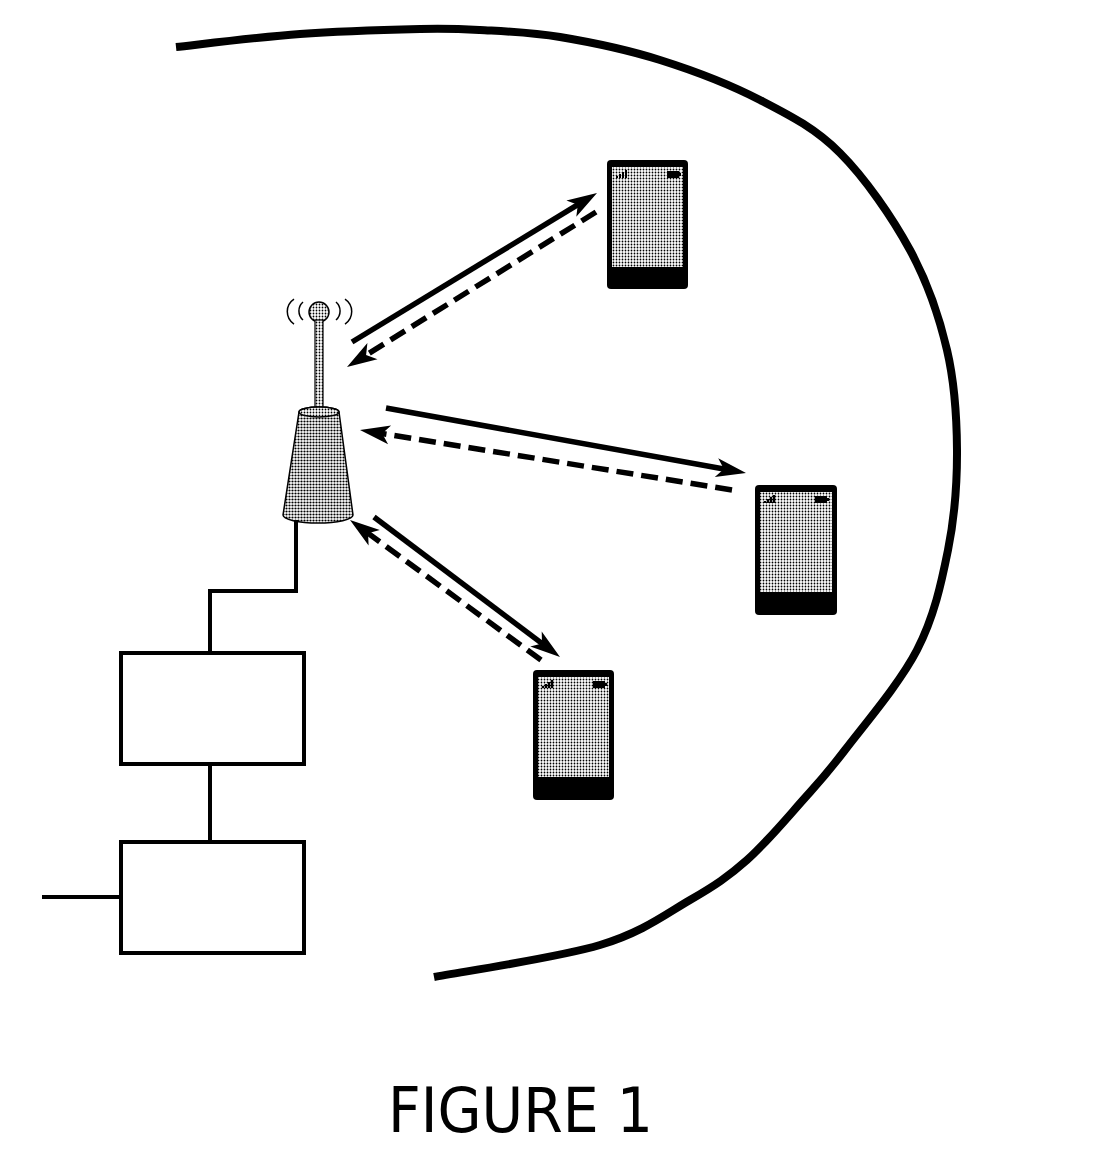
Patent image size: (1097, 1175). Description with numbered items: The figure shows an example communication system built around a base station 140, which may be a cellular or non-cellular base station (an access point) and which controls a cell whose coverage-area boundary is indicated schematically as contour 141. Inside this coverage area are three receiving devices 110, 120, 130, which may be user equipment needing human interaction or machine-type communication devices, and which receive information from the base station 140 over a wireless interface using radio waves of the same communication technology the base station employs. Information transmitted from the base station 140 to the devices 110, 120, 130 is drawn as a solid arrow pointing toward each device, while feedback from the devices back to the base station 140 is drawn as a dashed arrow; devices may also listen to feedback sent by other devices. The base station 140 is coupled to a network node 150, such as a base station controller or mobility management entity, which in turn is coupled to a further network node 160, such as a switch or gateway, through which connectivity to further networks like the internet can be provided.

The device 110 is at (690, 258).
The device 120 is at (837, 597).
The device 130 is at (613, 768).
The base station 140 is at (293, 470).
The contour 141 is at (802, 122).
The network node 150 is at (241, 723).
The further network node 160 is at (241, 913).